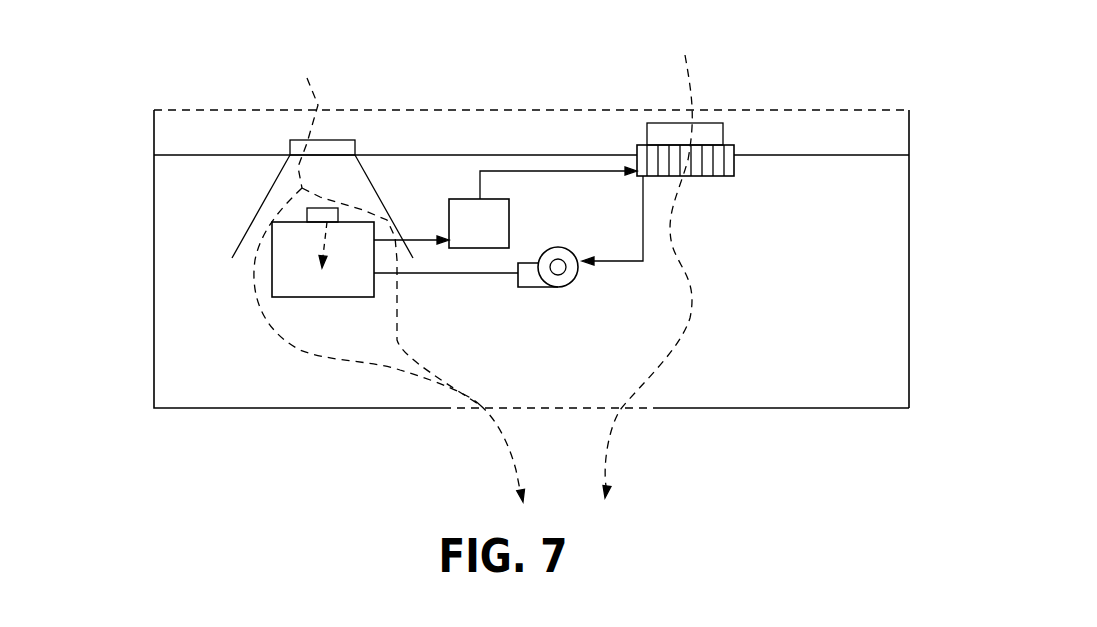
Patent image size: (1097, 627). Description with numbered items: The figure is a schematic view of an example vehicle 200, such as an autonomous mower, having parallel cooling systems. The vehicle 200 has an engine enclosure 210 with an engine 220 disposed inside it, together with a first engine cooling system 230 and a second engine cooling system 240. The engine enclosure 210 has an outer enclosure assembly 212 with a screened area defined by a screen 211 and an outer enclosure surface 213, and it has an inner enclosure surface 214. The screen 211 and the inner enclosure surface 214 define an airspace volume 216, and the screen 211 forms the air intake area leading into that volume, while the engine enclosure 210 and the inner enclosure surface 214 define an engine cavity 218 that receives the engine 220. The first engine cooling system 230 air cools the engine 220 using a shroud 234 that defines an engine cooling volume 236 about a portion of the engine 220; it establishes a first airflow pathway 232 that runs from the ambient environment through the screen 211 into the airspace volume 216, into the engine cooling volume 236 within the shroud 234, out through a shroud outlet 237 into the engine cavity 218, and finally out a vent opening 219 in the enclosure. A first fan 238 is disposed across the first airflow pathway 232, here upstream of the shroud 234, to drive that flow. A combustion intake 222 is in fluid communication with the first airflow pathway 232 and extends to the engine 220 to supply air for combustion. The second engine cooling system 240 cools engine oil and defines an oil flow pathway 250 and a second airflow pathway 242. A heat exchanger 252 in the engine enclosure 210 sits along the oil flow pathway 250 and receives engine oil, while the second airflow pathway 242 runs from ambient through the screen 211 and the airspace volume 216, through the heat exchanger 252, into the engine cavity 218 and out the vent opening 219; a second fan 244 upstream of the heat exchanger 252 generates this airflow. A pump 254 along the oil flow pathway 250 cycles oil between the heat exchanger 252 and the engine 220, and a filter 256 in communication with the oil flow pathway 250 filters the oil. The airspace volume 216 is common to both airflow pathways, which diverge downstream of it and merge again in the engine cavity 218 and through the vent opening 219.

The vehicle 200 is at (90, 139).
The engine enclosure 210 is at (141, 298).
The screen 211 is at (200, 110).
The outer enclosure assembly 212 is at (154, 105).
The outer enclosure surface 213 is at (910, 235).
The inner enclosure surface 214 is at (882, 153).
The airspace volume 216 is at (823, 127).
The engine cavity 218 is at (885, 345).
The vent opening 219 is at (457, 430).
The engine 220 is at (272, 277).
The combustion intake 222 is at (303, 213).
The first engine cooling system 230 is at (391, 171).
The first airflow pathway 232 is at (318, 93).
The shroud 234 is at (246, 232).
The engine cooling volume 236 is at (385, 233).
The shroud outlet 237 is at (247, 251).
The first fan 238 is at (337, 138).
The second engine cooling system 240 is at (719, 221).
The second airflow pathway 242 is at (673, 92).
The second fan 244 is at (710, 123).
The oil flow pathway 250 is at (612, 263).
The heat exchanger 252 is at (735, 167).
The pump 254 is at (547, 289).
The filter 256 is at (509, 222).